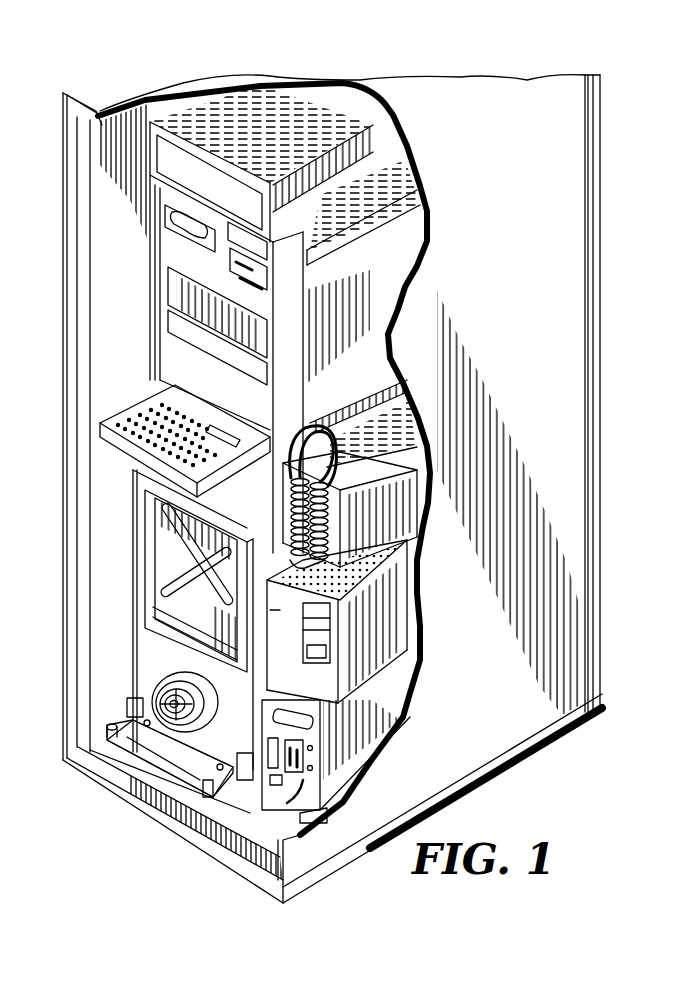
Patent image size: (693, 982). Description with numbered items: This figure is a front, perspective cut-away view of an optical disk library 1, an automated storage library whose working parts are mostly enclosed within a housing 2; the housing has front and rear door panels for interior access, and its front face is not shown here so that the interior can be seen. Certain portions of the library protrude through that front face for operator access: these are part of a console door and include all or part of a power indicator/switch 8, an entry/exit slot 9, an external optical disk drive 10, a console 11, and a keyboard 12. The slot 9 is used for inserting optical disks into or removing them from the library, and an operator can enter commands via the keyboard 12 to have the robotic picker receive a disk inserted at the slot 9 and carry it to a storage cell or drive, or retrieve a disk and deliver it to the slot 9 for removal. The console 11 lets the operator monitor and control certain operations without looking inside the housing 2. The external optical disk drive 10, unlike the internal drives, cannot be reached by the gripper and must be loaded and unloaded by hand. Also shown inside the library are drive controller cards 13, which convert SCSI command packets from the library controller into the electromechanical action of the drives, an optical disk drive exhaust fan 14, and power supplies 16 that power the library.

The library 1 is at (612, 96).
The housing 2 is at (600, 165).
The power indicator/switch 8 is at (195, 215).
The entry/exit slot 9 is at (208, 228).
The external optical disk drive 10 is at (305, 240).
The console 11 is at (240, 327).
The keyboard 12 is at (200, 430).
The drive controller cards 13 is at (345, 530).
The optical disk drive exhaust fan 14 is at (157, 683).
The power supplies 16 is at (393, 708).